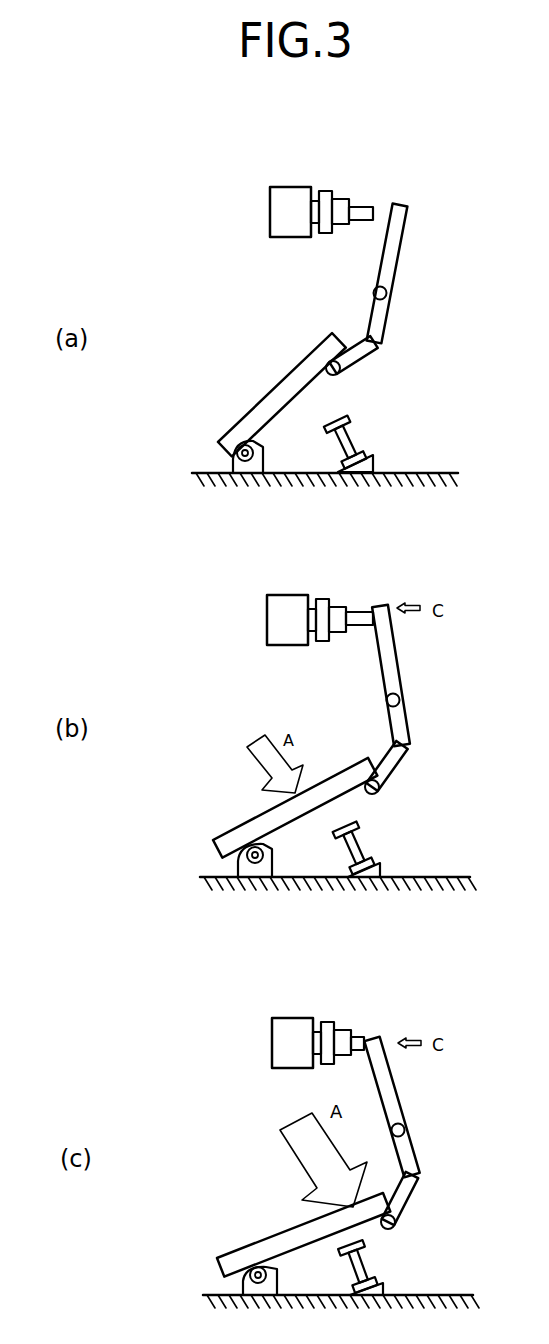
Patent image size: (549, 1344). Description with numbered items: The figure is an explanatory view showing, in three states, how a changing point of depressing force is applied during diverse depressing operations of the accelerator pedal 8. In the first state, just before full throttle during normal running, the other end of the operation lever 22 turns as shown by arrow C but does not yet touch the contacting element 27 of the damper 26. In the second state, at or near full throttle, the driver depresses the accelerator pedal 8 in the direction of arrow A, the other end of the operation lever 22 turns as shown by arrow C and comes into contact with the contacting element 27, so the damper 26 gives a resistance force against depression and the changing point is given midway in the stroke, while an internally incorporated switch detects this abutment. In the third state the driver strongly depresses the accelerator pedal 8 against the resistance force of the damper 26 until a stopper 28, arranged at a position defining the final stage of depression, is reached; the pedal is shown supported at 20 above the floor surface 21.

The accelerator pedal 8 is at (242, 417).
The pedal pivot shaft 20 is at (233, 471).
The floor 21 is at (435, 473).
The operation lever 22 is at (408, 263).
The damper 26 is at (283, 190).
The contacting element 27 is at (360, 204).
The stopper 28 is at (362, 1240).